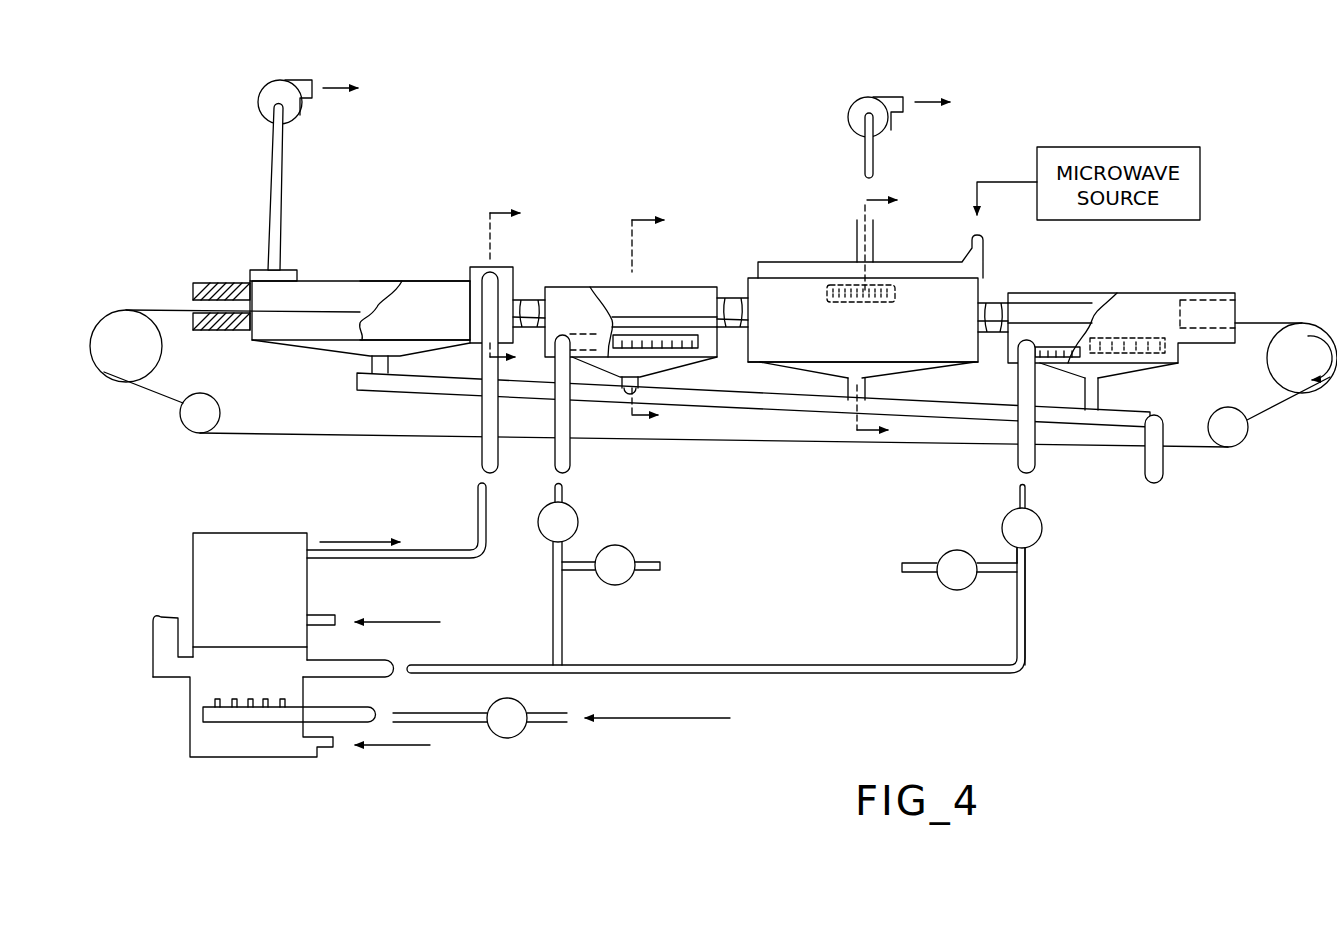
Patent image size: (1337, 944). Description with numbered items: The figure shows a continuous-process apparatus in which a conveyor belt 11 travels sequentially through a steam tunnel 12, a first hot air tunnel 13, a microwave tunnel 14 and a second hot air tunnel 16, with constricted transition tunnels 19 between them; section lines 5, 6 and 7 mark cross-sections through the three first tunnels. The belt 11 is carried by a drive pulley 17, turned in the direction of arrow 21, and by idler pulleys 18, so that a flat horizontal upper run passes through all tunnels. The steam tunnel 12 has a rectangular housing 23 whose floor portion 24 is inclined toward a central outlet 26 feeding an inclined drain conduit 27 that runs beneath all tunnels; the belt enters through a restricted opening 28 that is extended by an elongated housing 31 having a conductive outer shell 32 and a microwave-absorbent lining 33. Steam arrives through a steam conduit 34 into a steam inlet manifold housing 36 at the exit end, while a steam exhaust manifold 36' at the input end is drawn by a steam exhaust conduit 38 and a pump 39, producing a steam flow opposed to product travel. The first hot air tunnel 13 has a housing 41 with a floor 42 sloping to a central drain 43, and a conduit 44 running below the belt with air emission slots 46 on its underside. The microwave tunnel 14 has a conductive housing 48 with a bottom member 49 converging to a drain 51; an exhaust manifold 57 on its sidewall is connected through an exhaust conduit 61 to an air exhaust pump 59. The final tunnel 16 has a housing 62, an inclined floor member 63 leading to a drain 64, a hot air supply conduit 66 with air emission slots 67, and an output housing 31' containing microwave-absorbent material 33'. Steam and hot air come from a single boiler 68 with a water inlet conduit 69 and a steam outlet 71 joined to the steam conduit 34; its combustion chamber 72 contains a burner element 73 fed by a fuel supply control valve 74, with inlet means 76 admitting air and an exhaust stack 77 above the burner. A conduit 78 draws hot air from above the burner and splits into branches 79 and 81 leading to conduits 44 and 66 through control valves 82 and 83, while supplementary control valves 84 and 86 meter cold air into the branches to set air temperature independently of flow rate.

The section line 5- 5 is at (515, 284).
The section line 6- 6 is at (658, 311).
The section line 7- 7 is at (885, 307).
The conveyor belt 11 is at (1276, 320).
The steam tunnel 12 is at (350, 272).
The first hot air tunnel 13 is at (660, 277).
The microwave tunnel 14 is at (920, 258).
The second hot air tunnel 16 is at (1140, 288).
The drive pulley 17 is at (1267, 368).
The idler pulleys 18 is at (160, 350).
The transition tunnels 19 is at (530, 298).
The arrow 21 is at (1312, 325).
The housing 23 is at (420, 316).
The floor portion 24 is at (330, 352).
The outlet 26 is at (388, 365).
The drain conduit 27 is at (795, 414).
The restricted opening 28 is at (243, 297).
The elongated housing 31 is at (176, 225).
The output housing 31' is at (1240, 230).
The outer shell 32 is at (193, 283).
The absorbent lining 33 is at (221, 340).
The microwave-absorbent material 33' is at (1223, 297).
The steam conduit 34 is at (482, 458).
The steam inlet manifold housing 36 is at (480, 286).
The steam exhaust manifold 36' is at (289, 248).
The steam exhaust conduit 38 is at (287, 160).
The pump 39 is at (283, 80).
The housing 41 is at (555, 320).
The floor 42 is at (680, 362).
The central drain 43 is at (620, 385).
The conduit 44 is at (570, 455).
The air emission slots 46 is at (670, 338).
The housing 48 is at (920, 327).
The bottom member 49 is at (922, 370).
The drain 51 is at (845, 392).
The exhaust manifold 57 is at (843, 285).
The air exhaust pump 59 is at (870, 93).
The exhaust conduit 61 is at (873, 248).
The housing 62 is at (1138, 328).
The inclined floor member 63 is at (1150, 365).
The drain 64 is at (1100, 390).
The hot air supply conduit 66 is at (1017, 385).
The air emission slots 67 is at (1065, 350).
The boiler 68 is at (193, 560).
The water inlet conduit 69 is at (330, 615).
The steam outlet 71 is at (465, 548).
The combustion chamber 72 is at (190, 750).
The burner element 73 is at (253, 722).
The fuel supply control valve 74 is at (515, 738).
The inlet means 76 is at (330, 748).
The exhaust stack 77 is at (157, 615).
The conduit 78 is at (350, 662).
The branch 79 is at (563, 622).
The branch 81 is at (1027, 620).
The control valve 82 is at (580, 516).
The control valve 83 is at (1042, 528).
The supplementary control valve 84 is at (632, 553).
The supplementary control valve 86 is at (955, 590).